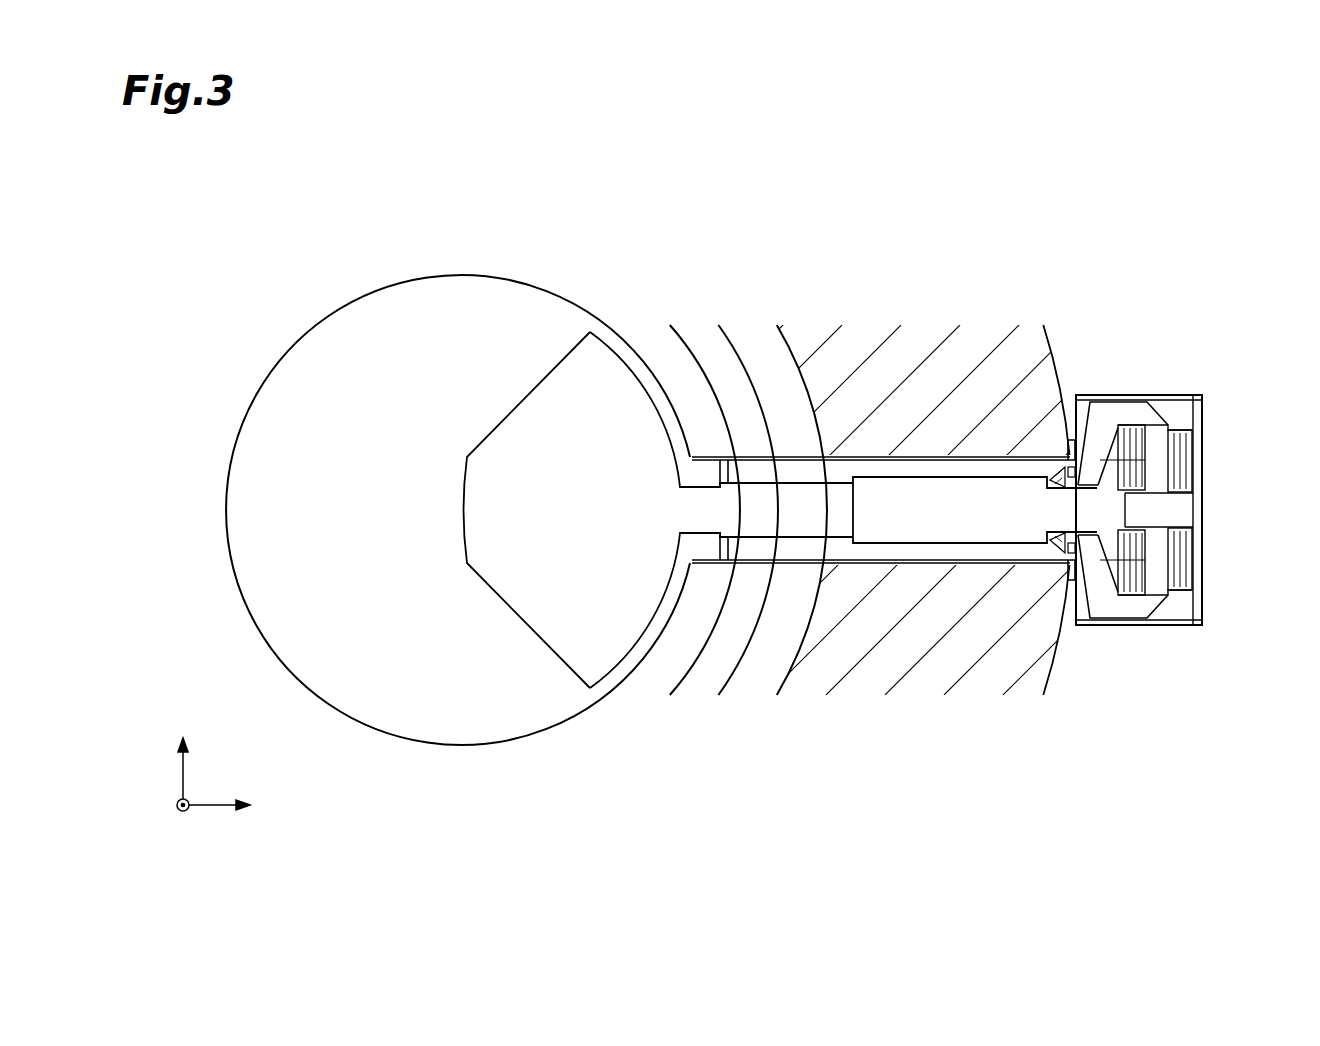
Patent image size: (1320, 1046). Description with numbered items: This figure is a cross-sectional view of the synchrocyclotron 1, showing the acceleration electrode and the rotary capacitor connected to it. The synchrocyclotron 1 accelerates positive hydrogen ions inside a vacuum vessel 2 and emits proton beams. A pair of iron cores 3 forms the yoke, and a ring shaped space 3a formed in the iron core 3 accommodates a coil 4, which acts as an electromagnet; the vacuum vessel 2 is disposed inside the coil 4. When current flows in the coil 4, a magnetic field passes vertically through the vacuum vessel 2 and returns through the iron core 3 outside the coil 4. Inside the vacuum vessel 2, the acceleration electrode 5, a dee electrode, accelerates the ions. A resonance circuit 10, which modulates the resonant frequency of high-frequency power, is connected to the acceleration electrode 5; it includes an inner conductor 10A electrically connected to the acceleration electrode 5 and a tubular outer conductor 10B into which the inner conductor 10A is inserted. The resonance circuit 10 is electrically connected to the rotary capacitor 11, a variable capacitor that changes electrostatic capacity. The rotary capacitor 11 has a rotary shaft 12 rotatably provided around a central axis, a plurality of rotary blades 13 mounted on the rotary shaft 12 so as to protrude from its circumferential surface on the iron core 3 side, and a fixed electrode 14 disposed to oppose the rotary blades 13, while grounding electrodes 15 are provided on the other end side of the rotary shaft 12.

The synchrocyclotron 1 is at (291, 234).
The vacuum vessel 2 is at (487, 275).
The iron core 3 is at (1042, 382).
The ring shaped space 3a is at (797, 650).
The coil 4 is at (705, 345).
The acceleration electrode 5 is at (558, 657).
The resonance circuit 10 is at (1028, 756).
The inner conductor 10A is at (1000, 545).
The outer conductor 10B is at (925, 567).
The rotary capacitor 11 is at (1207, 438).
The rotary shaft 12 is at (1178, 510).
The rotary blades 13 is at (1142, 432).
The fixed electrode 14 is at (1170, 594).
The grounding electrodes 15 is at (1187, 432).